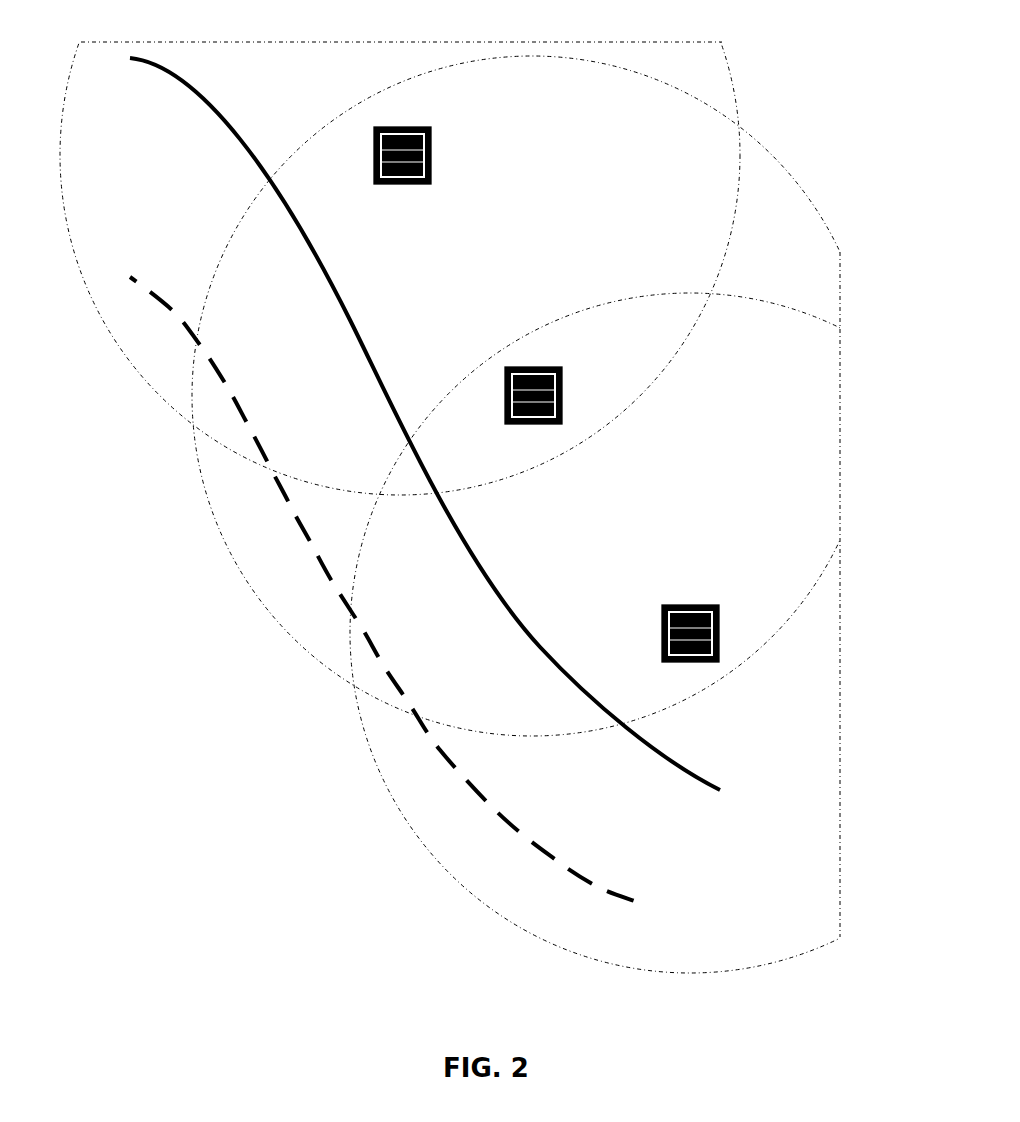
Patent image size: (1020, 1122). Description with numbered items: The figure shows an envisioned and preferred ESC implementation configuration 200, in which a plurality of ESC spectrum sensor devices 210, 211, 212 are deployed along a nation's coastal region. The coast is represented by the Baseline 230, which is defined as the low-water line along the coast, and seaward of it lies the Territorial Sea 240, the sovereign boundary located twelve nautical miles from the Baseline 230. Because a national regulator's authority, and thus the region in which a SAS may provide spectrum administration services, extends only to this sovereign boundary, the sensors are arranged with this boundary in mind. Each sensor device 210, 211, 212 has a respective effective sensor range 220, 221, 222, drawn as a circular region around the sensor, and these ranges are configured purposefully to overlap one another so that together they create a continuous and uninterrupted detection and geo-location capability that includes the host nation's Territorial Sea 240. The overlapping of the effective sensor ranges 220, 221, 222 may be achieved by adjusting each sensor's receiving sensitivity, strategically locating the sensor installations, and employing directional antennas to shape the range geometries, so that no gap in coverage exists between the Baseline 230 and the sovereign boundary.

The ESC implementation configuration 200 is at (539, 486).
The ESC spectrum sensor device 210 is at (394, 112).
The ESC spectrum sensor device 211 is at (524, 353).
The ESC spectrum sensor device 212 is at (688, 582).
The effective sensor range 220 is at (141, 400).
The effective sensor range 221 is at (287, 645).
The effective sensor range 222 is at (406, 832).
The Baseline 230 is at (690, 782).
The Territorial Sea 240 is at (579, 880).